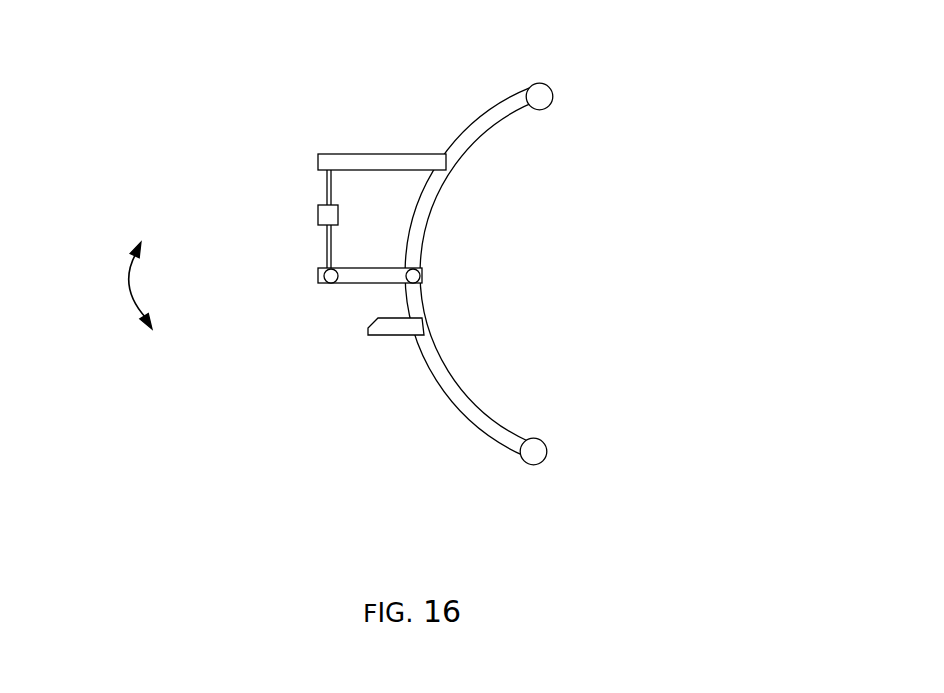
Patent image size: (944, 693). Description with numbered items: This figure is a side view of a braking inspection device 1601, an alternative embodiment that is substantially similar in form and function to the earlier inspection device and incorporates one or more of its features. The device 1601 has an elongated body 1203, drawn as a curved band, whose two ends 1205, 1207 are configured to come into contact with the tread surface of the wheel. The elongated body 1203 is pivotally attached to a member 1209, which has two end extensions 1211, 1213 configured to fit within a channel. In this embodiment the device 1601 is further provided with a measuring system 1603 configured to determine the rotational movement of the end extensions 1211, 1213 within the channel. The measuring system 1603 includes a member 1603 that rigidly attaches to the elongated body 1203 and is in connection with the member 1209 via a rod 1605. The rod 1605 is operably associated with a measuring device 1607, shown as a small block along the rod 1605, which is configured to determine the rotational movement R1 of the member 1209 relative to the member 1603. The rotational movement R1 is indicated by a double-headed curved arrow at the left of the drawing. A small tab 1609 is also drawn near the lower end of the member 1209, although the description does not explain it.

The elongated body 1203 is at (478, 113).
The end 1205 is at (547, 109).
The end 1207 is at (547, 453).
The member 1209 is at (370, 285).
The end extension 1211 is at (419, 272).
The end extension 1213 is at (325, 285).
The braking inspection device 1601 is at (712, 124).
The measuring system 1603 is at (385, 153).
The rod 1605 is at (323, 188).
The measuring device 1607 is at (318, 222).
The tab 1609 is at (398, 335).
The rotational movement R1 is at (122, 285).